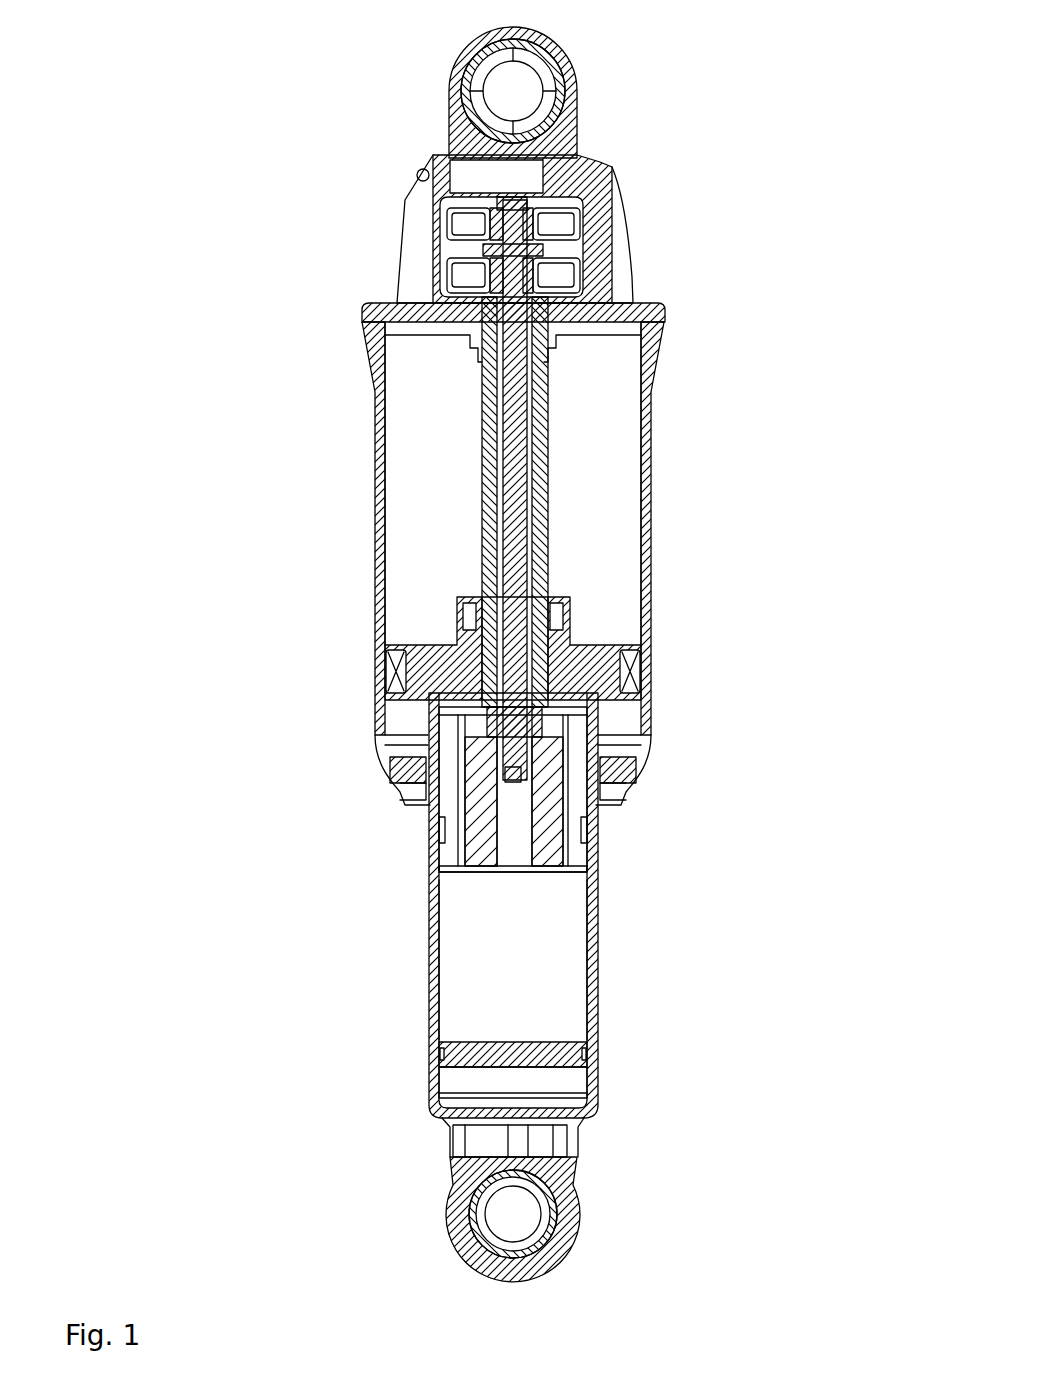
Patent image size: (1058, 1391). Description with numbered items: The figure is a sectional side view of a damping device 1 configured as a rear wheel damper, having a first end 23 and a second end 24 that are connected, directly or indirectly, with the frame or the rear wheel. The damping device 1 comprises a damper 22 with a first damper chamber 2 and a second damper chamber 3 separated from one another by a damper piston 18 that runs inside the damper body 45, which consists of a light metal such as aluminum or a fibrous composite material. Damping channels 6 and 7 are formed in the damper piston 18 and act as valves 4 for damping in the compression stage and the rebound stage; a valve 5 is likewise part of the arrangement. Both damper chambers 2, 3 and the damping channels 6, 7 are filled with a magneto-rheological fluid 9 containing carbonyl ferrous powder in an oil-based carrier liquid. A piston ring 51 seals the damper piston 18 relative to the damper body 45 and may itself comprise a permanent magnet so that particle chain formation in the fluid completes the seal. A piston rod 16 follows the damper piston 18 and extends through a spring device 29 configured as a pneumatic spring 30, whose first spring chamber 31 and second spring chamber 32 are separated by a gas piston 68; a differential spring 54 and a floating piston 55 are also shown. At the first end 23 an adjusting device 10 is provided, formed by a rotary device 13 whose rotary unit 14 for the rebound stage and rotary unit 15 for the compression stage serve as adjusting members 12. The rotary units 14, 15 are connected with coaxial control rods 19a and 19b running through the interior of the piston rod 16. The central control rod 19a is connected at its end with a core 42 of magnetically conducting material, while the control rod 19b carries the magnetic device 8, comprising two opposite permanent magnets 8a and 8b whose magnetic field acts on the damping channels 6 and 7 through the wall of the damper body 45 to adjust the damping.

The damping device 1 is at (205, 100).
The first damper chamber 2 is at (548, 788).
The second damper chamber 3 is at (570, 965).
The valve 4 is at (460, 900).
The valve 5 is at (418, 850).
The damping channel 6 is at (565, 880).
The damping channel 7 is at (525, 878).
The magnetic device 8 is at (598, 813).
The permanent magnet 8a is at (430, 866).
The permanent magnet 8b is at (547, 833).
The magneto-rheological fluid 9 is at (570, 1020).
The adjusting device 10 is at (565, 205).
The adjusting member 12 is at (575, 228).
The rotary device 13 is at (577, 245).
The rotary unit for the rebound stage 14 is at (447, 232).
The rotary unit for the compression stage 15 is at (447, 272).
The piston rod 16 is at (550, 550).
The damper piston 18 is at (573, 752).
The control rod 19a is at (508, 514).
The control rod 19b is at (525, 446).
The damper 22 is at (385, 944).
The first end 23 is at (620, 45).
The second end 24 is at (610, 1275).
The spring device 29 is at (338, 430).
The pneumatic spring 30 is at (405, 504).
The first spring chamber 31 is at (405, 561).
The second spring chamber 32 is at (402, 700).
The core 42 is at (550, 858).
The damper body 45 is at (430, 1012).
The piston ring 51 is at (433, 833).
The differential spring 54 is at (450, 1083).
The floating piston 55 is at (432, 1063).
The piston 68 is at (395, 652).